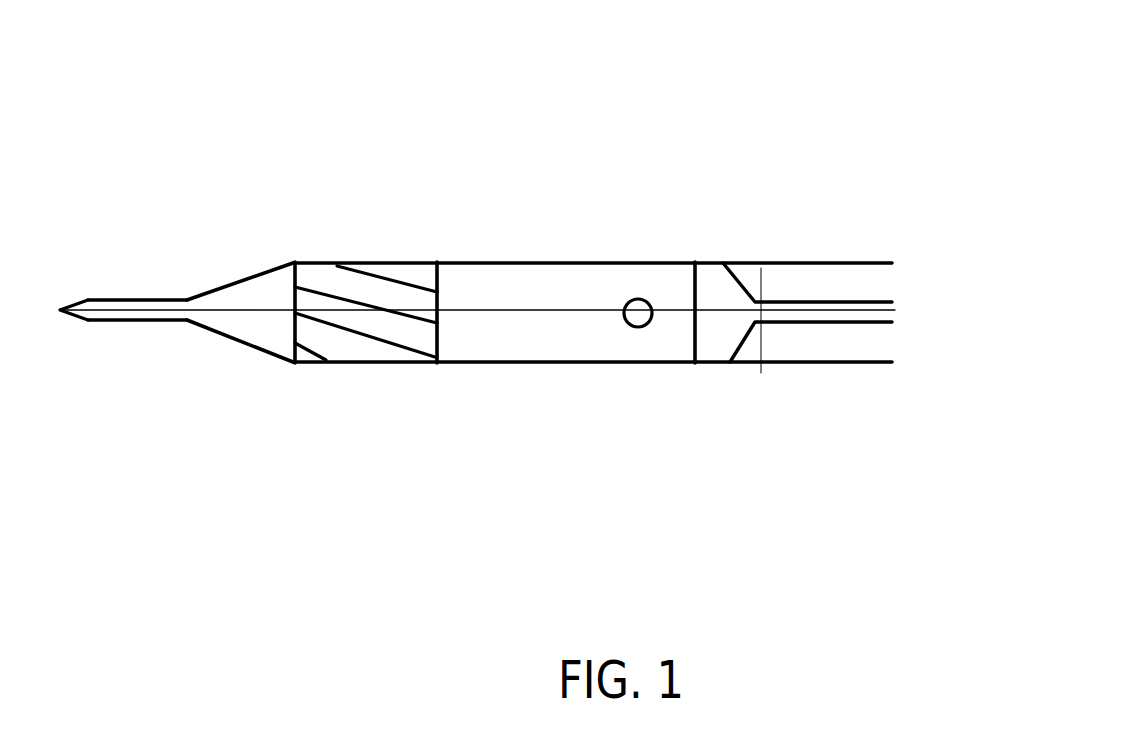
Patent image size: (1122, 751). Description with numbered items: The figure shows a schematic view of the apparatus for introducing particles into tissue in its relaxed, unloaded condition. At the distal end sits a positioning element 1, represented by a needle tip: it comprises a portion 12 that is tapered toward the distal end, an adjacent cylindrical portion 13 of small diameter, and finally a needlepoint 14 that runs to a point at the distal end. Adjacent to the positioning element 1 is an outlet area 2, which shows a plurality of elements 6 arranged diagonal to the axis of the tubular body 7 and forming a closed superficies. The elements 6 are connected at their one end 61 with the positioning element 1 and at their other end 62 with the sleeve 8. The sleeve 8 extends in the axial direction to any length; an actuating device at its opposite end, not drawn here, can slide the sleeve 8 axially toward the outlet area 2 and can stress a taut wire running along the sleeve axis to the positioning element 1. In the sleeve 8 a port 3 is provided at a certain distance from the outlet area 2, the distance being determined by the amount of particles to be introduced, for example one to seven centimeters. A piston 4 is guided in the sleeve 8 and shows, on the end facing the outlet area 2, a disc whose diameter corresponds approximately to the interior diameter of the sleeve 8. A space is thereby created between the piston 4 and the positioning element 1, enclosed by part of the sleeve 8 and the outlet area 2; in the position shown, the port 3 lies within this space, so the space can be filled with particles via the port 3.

The positioning element 1 is at (462, 282).
The outlet area 2 is at (333, 267).
The port 3 is at (637, 298).
The piston 4 is at (718, 284).
The elements 6 is at (398, 330).
The tubular body 7 is at (592, 299).
The sleeve 8 is at (513, 262).
The portion 12 is at (243, 277).
The cylindrical portion 13 is at (130, 293).
The needlepoint 14 is at (72, 300).
The one end 61 is at (294, 325).
The other end 62 is at (443, 262).